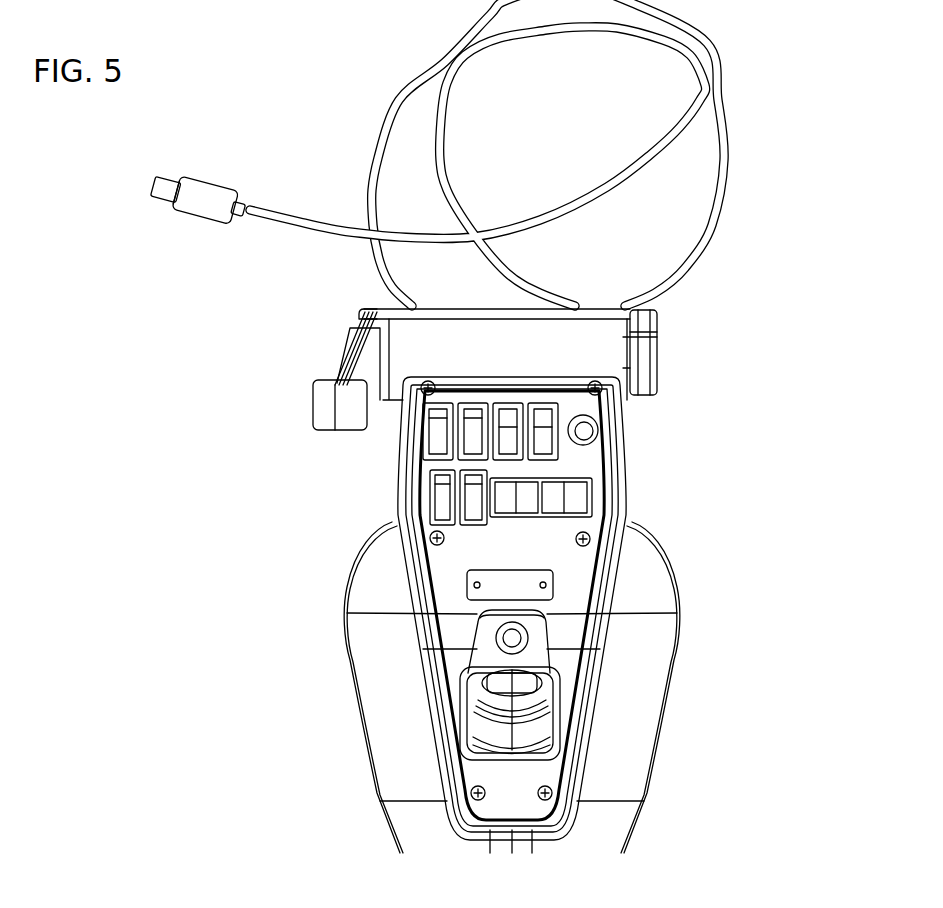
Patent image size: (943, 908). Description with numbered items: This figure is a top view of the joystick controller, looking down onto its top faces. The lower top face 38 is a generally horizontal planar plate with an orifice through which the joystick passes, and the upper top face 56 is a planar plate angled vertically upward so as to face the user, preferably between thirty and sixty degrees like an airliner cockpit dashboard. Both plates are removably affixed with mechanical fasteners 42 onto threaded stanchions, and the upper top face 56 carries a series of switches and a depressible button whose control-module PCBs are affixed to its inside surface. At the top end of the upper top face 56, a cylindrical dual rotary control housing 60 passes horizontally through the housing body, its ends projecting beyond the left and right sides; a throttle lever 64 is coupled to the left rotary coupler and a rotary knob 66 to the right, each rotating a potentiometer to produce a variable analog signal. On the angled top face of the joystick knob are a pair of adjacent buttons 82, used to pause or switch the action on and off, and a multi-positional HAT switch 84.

The lower top face 38 is at (573, 667).
The mechanical fasteners 42 is at (597, 394).
The upper top face 56 is at (588, 458).
The dual rotary control housing 60 is at (593, 337).
The throttle lever 64 is at (322, 393).
The rotary knob 66 is at (650, 368).
The adjacent buttons 82 is at (530, 682).
The multi-positional HAT switch 84 is at (506, 640).